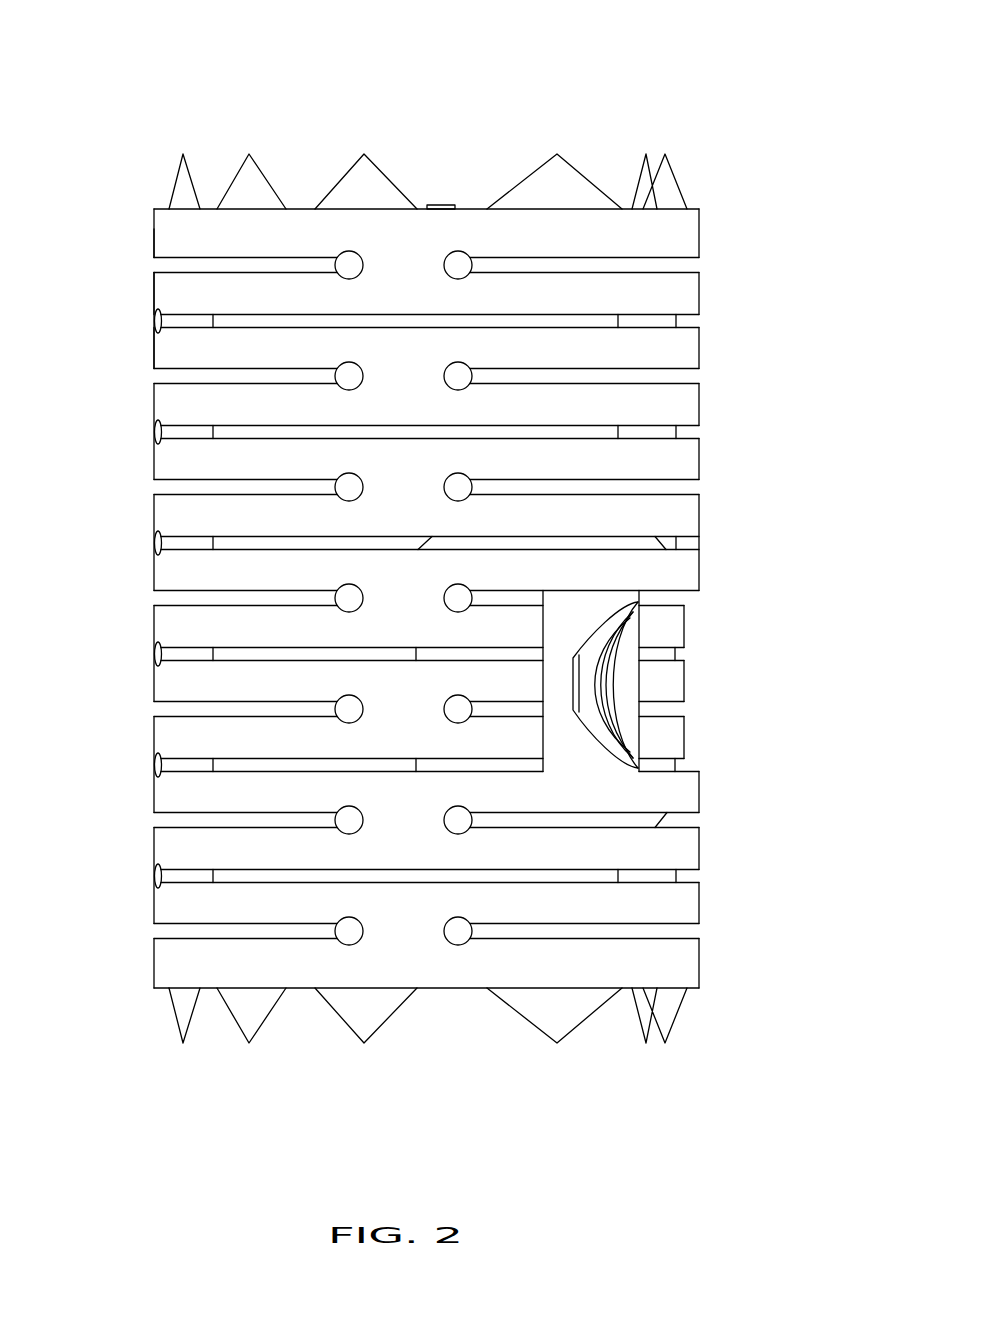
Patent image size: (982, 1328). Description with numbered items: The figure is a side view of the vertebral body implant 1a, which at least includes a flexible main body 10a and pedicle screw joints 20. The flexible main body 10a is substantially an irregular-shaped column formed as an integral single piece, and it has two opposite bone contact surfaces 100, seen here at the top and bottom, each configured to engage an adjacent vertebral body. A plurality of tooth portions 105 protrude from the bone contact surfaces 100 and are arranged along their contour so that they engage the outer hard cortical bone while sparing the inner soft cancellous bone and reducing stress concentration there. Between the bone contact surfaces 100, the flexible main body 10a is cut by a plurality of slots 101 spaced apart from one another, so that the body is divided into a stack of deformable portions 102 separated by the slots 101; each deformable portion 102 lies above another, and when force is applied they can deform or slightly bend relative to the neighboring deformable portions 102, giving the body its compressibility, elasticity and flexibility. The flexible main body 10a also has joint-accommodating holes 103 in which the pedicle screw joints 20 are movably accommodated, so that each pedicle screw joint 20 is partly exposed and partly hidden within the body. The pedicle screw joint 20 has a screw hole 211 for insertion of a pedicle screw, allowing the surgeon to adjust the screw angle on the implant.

The vertebral body implant 1a is at (86, 71).
The flexible main body 10a is at (730, 229).
The bone contact surfaces 100 is at (474, 209).
The slots 101 is at (702, 320).
The deformable portions 102 is at (177, 350).
The joint-accommodating holes 103 is at (718, 681).
The tooth portions 105 is at (668, 176).
The pedicle screw joints 20 is at (650, 748).
The screw hole 211 is at (610, 668).